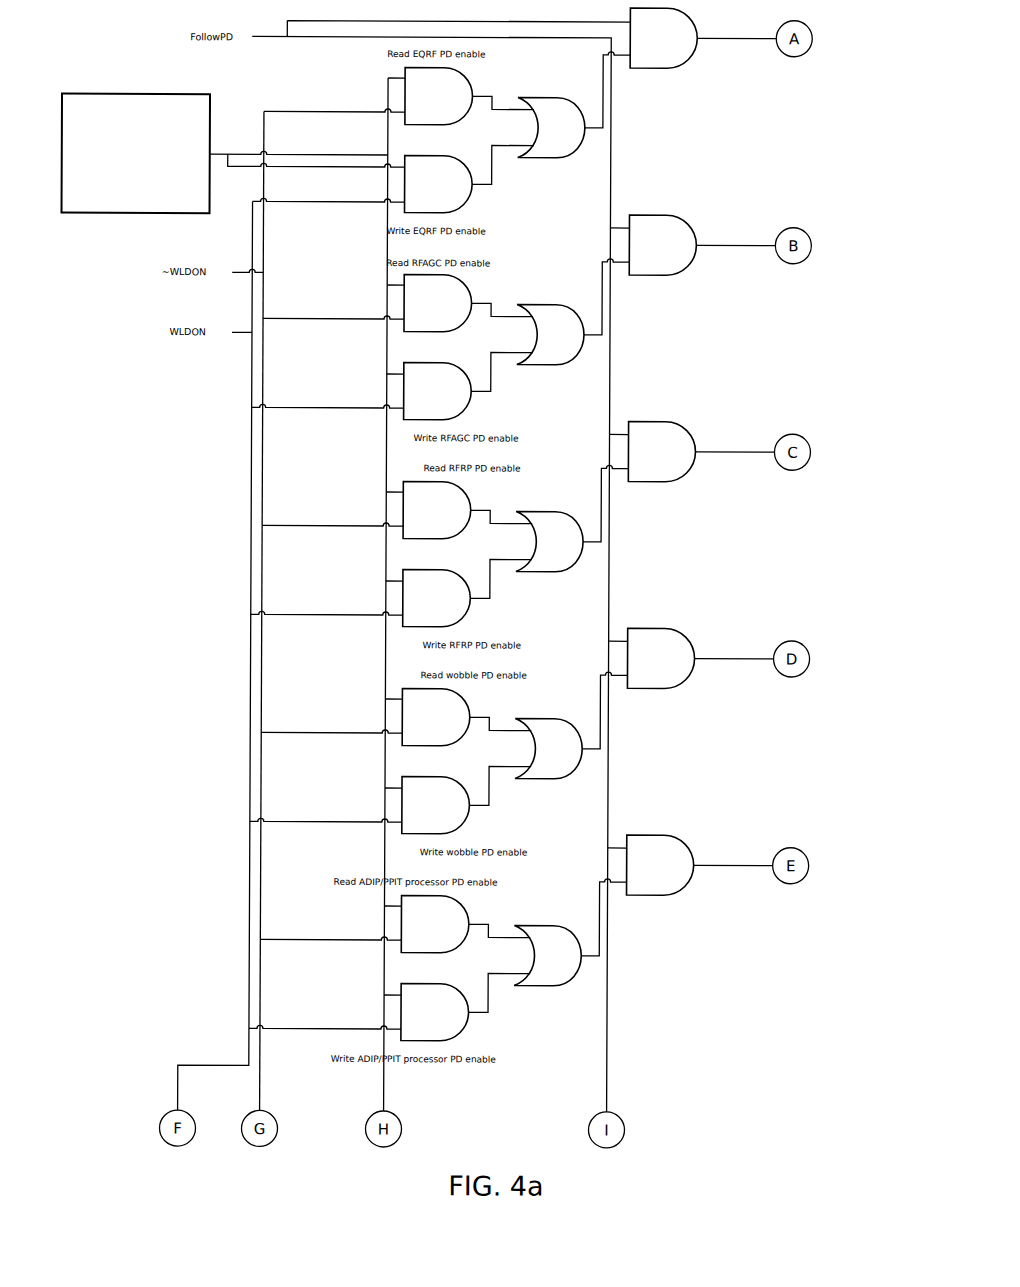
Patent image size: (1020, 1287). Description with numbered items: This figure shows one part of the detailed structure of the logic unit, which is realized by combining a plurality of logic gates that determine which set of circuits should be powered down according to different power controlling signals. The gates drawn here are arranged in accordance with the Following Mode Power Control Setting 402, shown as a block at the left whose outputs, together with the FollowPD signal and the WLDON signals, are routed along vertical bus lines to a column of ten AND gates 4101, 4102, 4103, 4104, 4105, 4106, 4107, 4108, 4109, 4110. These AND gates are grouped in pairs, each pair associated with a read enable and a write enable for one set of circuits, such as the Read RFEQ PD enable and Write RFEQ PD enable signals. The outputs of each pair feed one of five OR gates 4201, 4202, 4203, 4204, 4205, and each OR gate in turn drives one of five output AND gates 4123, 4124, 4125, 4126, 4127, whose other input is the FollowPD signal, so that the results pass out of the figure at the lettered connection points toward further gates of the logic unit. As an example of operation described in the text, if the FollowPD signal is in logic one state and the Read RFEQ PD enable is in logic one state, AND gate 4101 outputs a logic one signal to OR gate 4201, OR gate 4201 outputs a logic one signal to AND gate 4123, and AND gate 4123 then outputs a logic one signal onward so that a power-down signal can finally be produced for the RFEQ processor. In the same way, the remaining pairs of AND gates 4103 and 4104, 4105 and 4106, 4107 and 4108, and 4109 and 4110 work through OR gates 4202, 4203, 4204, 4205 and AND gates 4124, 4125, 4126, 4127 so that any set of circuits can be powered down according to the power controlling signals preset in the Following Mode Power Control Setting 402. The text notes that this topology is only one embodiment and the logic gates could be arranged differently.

The Following Mode Power Control Setting 402 is at (110, 214).
The AND gate 4101 is at (439, 96).
The AND gate 4102 is at (439, 184).
The AND gate 4103 is at (438, 303).
The AND gate 4104 is at (438, 391).
The AND gate 4105 is at (437, 510).
The AND gate 4106 is at (437, 598).
The AND gate 4107 is at (436, 717).
The AND gate 4108 is at (436, 805).
The AND gate 4109 is at (435, 924).
The AND gate 4110 is at (435, 1012).
The OR gate 4201 is at (551, 128).
The OR gate 4202 is at (550, 335).
The OR gate 4203 is at (549, 542).
The OR gate 4204 is at (548, 749).
The OR gate 4205 is at (547, 956).
The AND gate 4123 is at (663, 38).
The AND gate 4124 is at (662, 245).
The AND gate 4125 is at (661, 452).
The AND gate 4126 is at (660, 658).
The AND gate 4127 is at (660, 865).